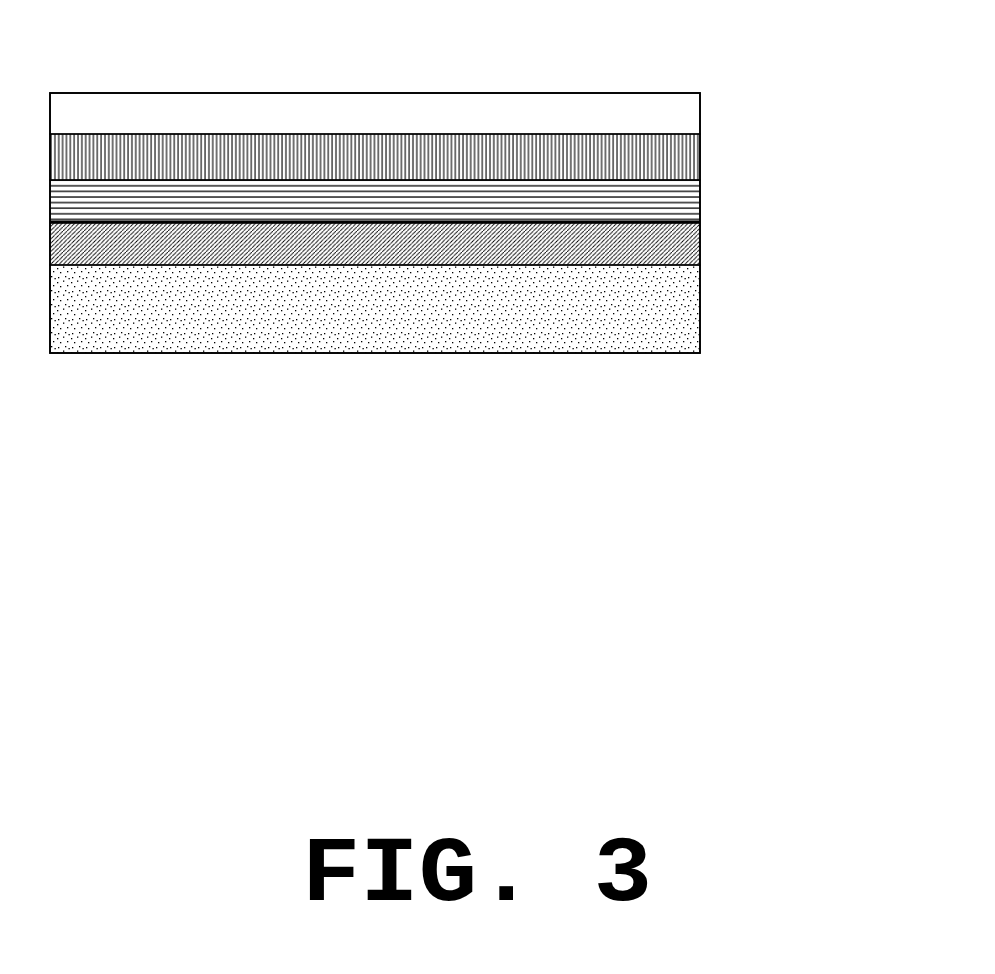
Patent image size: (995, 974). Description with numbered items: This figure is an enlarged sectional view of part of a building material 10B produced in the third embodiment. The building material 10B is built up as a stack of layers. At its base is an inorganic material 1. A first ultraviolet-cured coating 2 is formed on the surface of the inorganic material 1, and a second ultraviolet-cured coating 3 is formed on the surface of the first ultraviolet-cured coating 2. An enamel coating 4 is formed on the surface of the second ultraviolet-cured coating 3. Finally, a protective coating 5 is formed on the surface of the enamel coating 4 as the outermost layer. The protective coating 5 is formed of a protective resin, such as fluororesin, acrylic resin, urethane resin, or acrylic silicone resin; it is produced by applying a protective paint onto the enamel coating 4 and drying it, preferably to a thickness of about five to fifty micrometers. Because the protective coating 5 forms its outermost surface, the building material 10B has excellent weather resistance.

The building material 10B is at (570, 87).
The inorganic material 1 is at (663, 322).
The first ultraviolet-cured coating 2 is at (673, 243).
The second ultraviolet-cured coating 3 is at (700, 207).
The enamel coating 4 is at (692, 157).
The protective coating 5 is at (692, 117).